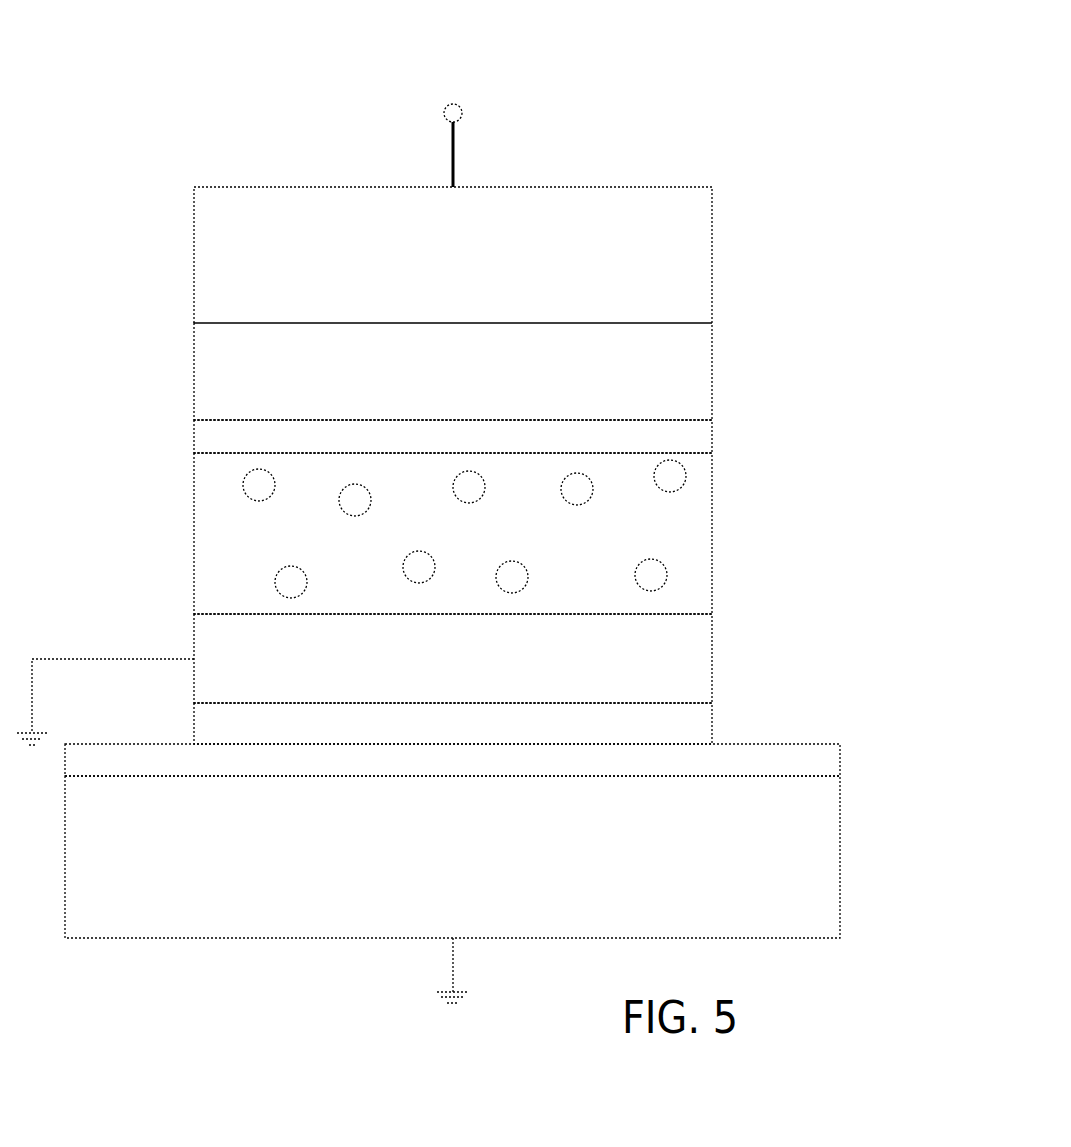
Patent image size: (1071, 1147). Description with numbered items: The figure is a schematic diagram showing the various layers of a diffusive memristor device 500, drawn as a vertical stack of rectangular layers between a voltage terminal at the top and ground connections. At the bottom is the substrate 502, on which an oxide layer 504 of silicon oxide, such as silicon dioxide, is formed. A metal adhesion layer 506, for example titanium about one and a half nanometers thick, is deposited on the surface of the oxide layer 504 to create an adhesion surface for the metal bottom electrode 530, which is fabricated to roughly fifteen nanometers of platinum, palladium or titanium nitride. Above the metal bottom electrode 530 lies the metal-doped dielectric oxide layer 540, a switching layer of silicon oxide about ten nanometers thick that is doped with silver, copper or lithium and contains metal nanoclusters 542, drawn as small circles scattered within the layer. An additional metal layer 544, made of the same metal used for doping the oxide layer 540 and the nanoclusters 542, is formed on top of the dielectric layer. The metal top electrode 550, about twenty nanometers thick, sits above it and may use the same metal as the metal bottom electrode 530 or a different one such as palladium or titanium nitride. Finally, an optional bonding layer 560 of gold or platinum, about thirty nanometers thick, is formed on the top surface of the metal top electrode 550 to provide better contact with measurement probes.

The diffusive memristor device 500 is at (826, 105).
The substrate 502 is at (843, 858).
The oxide layer 504 is at (843, 760).
The metal adhesion layer 506 is at (714, 724).
The metal bottom electrode 530 is at (714, 658).
The metal-doped dielectric oxide layer 540 is at (464, 530).
The metal nanoclusters 542 is at (242, 486).
The additional metal layer 544 is at (714, 437).
The metal top electrode 550 is at (714, 374).
The bonding layer 560 is at (714, 258).